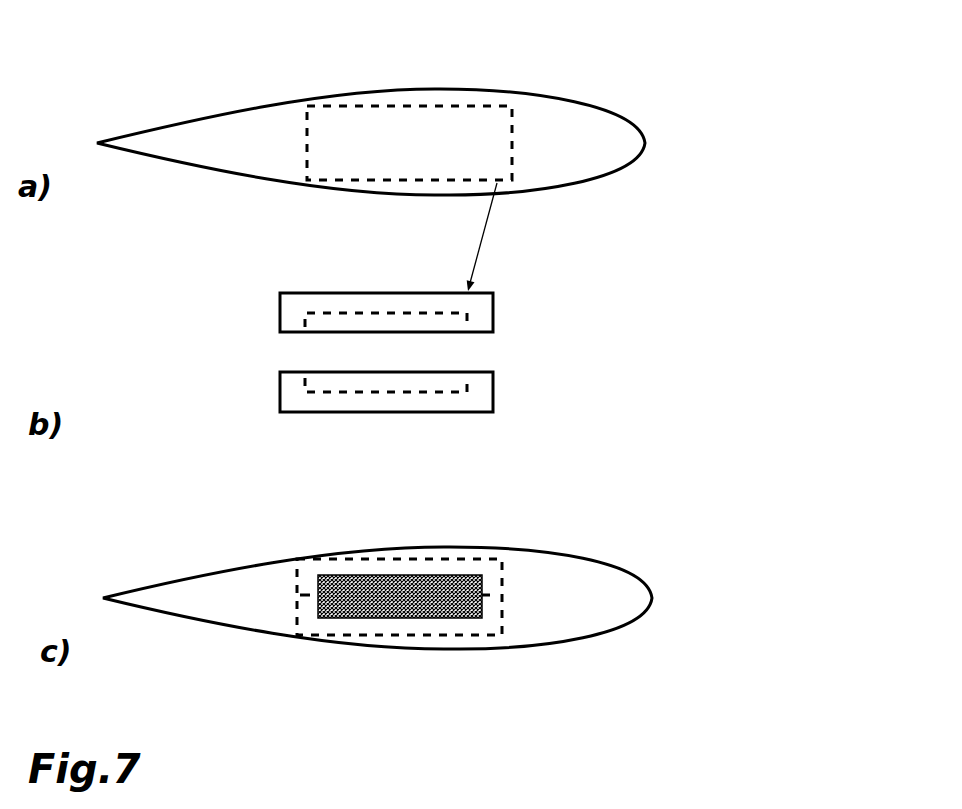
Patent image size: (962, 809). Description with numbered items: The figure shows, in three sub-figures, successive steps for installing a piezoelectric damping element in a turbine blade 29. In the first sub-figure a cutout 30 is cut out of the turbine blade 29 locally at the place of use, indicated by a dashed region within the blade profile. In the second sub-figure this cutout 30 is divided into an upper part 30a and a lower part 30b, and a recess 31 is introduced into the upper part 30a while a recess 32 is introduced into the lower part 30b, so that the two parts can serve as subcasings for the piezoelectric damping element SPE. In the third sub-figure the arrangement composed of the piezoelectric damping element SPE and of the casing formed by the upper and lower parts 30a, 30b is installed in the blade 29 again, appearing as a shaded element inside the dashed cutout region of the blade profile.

The turbine blade 29 is at (697, 94).
The cutout 30 is at (441, 97).
The upper part 30a is at (387, 302).
The recess 31 is at (330, 318).
The lower part 30b is at (387, 400).
The recess 32 is at (330, 380).
The piezoelectric damping element SPE is at (435, 631).